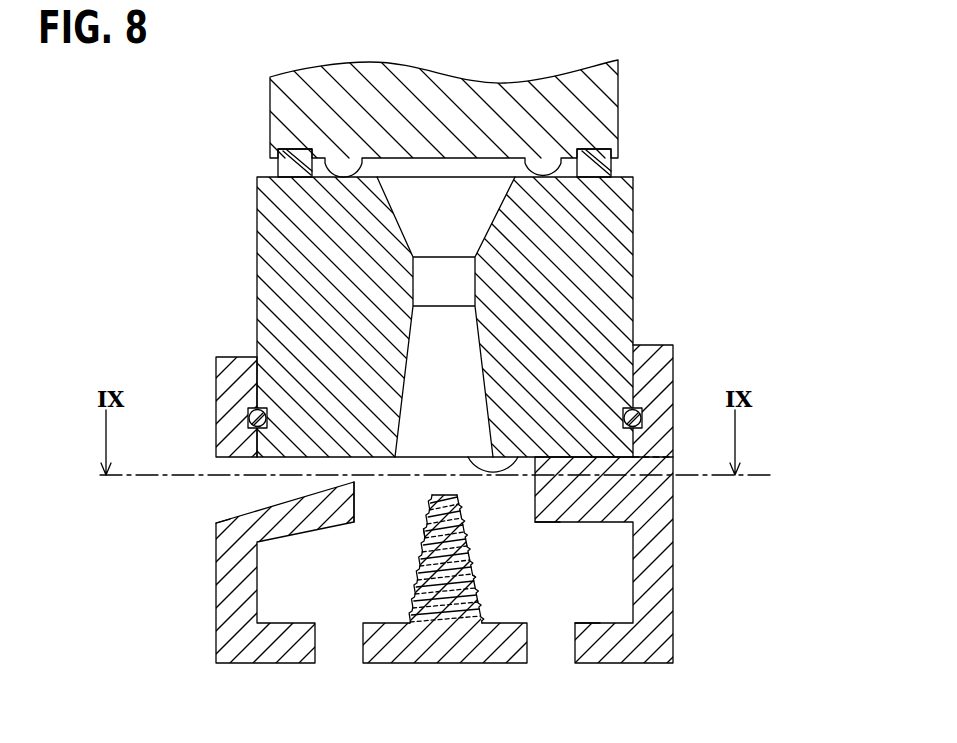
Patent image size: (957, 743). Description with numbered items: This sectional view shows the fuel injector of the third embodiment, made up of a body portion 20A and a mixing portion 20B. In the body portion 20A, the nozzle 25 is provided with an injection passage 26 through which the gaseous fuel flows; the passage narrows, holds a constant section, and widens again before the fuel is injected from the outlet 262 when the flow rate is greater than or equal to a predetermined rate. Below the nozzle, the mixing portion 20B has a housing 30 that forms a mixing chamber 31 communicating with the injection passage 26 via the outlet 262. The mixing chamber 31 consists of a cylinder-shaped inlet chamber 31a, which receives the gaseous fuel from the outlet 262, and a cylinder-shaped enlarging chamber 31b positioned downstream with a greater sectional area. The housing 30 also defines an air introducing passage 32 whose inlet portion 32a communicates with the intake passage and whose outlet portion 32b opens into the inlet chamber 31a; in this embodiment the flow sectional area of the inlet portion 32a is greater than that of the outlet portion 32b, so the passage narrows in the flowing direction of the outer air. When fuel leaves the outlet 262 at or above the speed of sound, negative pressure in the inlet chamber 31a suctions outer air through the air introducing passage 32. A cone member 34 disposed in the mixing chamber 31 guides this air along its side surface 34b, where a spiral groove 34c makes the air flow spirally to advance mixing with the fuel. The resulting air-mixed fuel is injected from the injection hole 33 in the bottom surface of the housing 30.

The body portion 20A is at (210, 263).
The mixing portion 20B is at (173, 628).
The nozzle 25 is at (283, 213).
The injection passage 26 is at (462, 213).
The outlet 262 is at (515, 458).
The housing 30 is at (217, 553).
The mixing chamber 31 is at (770, 553).
The inlet chamber 31a is at (507, 520).
The enlarging chamber 31b is at (597, 603).
The air introducing passage 32 is at (290, 501).
The inlet portion 32a is at (217, 524).
The outlet portion 32b is at (356, 486).
The injection hole 33 is at (350, 650).
The cone member 34 is at (445, 588).
The side surface 34b is at (423, 556).
The spiral groove 34c is at (478, 575).